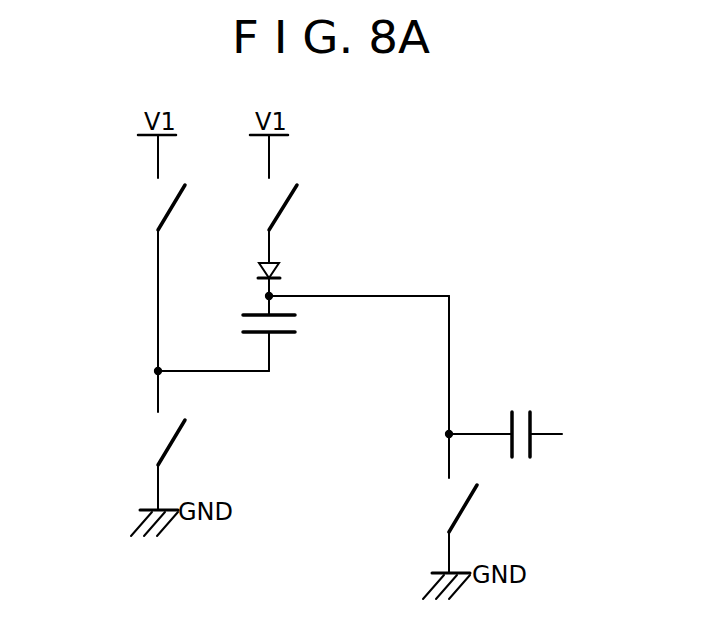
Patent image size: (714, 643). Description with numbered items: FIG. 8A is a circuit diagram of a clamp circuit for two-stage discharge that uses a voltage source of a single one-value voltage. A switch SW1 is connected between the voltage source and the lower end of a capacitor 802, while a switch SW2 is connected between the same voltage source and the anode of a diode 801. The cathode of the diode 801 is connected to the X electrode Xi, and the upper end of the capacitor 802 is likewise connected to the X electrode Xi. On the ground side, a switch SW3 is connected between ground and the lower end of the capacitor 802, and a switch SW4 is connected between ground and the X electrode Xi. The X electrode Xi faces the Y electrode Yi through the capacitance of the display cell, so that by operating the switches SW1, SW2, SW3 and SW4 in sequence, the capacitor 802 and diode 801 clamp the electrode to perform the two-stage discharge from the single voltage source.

The diode 801 is at (281, 272).
The capacitor 802 is at (298, 322).
The switch SW1 is at (161, 208).
The switch SW2 is at (273, 208).
The switch SW3 is at (161, 441).
The switch SW4 is at (452, 506).
The X electrode Xi is at (509, 424).
The Y electrode Yi is at (533, 422).